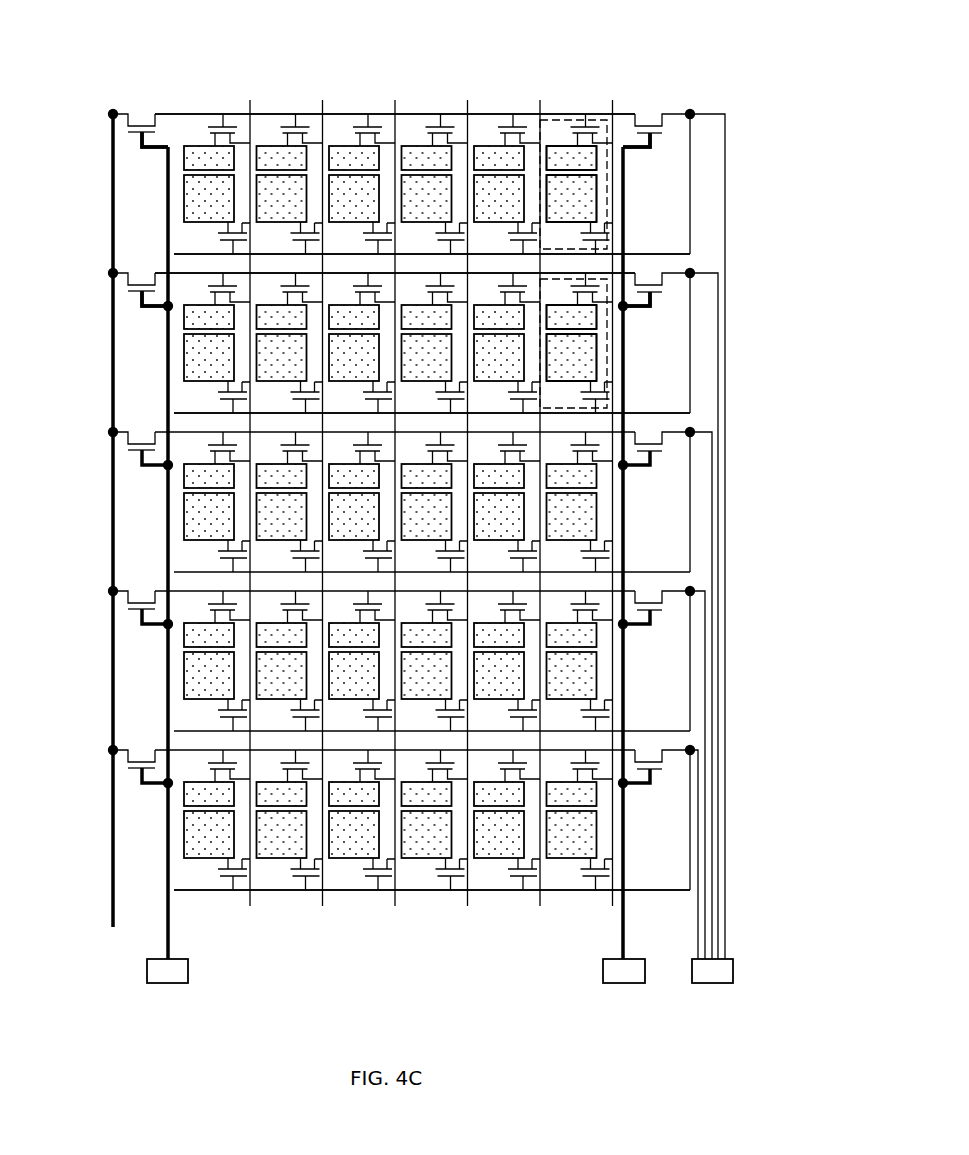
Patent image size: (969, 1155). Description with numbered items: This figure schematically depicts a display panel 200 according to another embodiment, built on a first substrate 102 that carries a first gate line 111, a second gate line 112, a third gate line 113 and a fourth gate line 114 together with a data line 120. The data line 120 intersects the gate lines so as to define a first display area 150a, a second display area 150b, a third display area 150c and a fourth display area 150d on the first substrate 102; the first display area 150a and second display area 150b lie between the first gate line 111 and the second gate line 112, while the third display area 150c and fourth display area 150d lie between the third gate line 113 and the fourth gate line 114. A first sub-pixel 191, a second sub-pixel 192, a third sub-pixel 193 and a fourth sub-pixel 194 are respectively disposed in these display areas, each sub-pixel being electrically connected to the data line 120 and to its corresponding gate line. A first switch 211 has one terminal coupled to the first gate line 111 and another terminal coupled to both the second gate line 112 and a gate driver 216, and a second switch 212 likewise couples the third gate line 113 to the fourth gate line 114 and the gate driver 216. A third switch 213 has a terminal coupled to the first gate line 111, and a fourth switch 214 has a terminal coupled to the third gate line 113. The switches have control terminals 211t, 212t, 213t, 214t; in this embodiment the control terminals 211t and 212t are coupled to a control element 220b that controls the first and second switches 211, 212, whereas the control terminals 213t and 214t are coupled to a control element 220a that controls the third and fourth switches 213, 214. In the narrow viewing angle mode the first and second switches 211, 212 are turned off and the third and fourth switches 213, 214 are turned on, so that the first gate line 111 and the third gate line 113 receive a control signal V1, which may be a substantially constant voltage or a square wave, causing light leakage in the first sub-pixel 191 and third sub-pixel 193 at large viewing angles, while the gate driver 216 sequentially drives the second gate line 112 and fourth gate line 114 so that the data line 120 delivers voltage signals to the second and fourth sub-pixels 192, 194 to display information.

The display panel 200 is at (83, 36).
The first gate line 111 is at (167, 112).
The second gate line 112 is at (186, 253).
The third gate line 113 is at (167, 333).
The fourth gate line 114 is at (190, 412).
The data line 120 is at (250, 105).
The first substrate 102 is at (410, 943).
The first display area 150a is at (608, 162).
The second display area 150b is at (608, 190).
The third display area 150c is at (608, 327).
The fourth display area 150d is at (608, 375).
The first sub-pixel 191 is at (557, 146).
The second sub-pixel 192 is at (555, 192).
The third sub-pixel 193 is at (588, 318).
The fourth sub-pixel 194 is at (588, 357).
The first switch 211 is at (650, 112).
The control terminal 211t is at (652, 139).
The second switch 212 is at (648, 276).
The control terminal 212t is at (652, 300).
The third switch 213 is at (125, 123).
The control terminal 213t is at (140, 138).
The fourth switch 214 is at (125, 283).
The control terminal 214t is at (139, 297).
The gate driver 216 is at (713, 978).
The control element 220a is at (168, 978).
The control element 220b is at (623, 978).
The control signal V1 is at (111, 535).